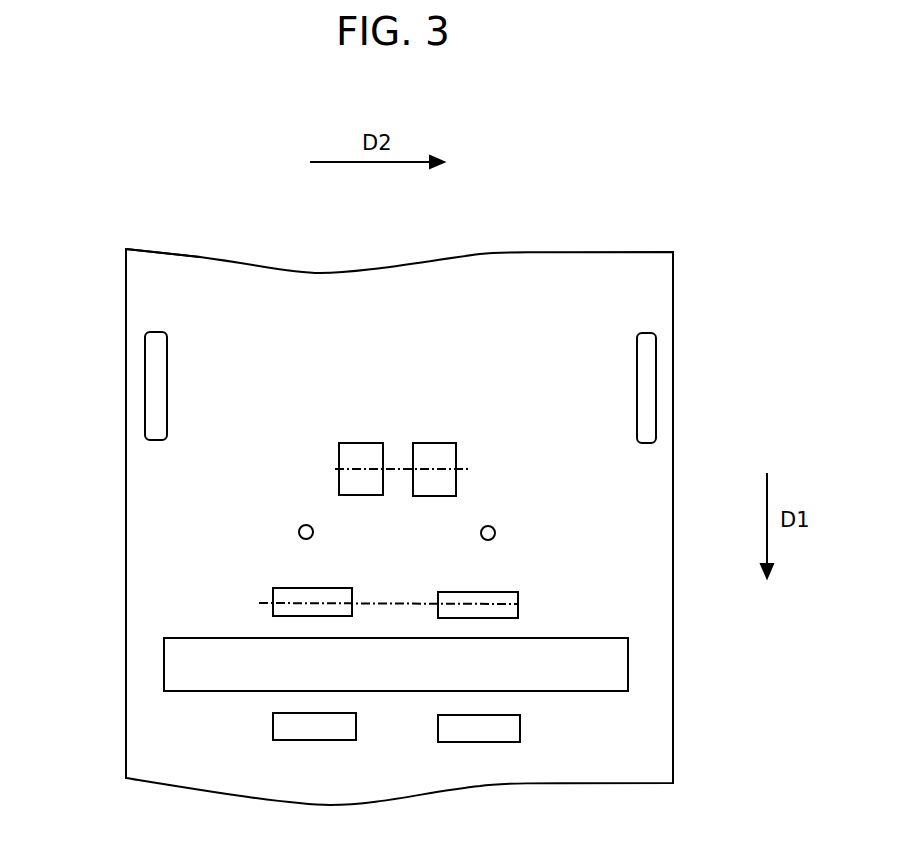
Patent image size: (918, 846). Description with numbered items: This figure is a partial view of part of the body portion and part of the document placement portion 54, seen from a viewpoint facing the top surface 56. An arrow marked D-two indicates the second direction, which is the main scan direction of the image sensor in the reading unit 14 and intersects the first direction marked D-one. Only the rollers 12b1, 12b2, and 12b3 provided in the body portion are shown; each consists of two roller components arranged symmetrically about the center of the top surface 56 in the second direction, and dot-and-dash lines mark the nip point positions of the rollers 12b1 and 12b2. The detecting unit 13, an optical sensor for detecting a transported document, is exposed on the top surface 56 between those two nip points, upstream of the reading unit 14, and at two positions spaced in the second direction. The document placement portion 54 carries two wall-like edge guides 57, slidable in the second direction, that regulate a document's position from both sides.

The document placement portion 54 is at (137, 282).
The edge guides 57 is at (145, 373).
The top surface 56 is at (145, 492).
The roller 12b1 is at (430, 455).
The detecting unit 13 is at (300, 526).
The roller 12b2 is at (352, 588).
The reading unit 14 is at (172, 657).
The roller 12b3 is at (448, 742).